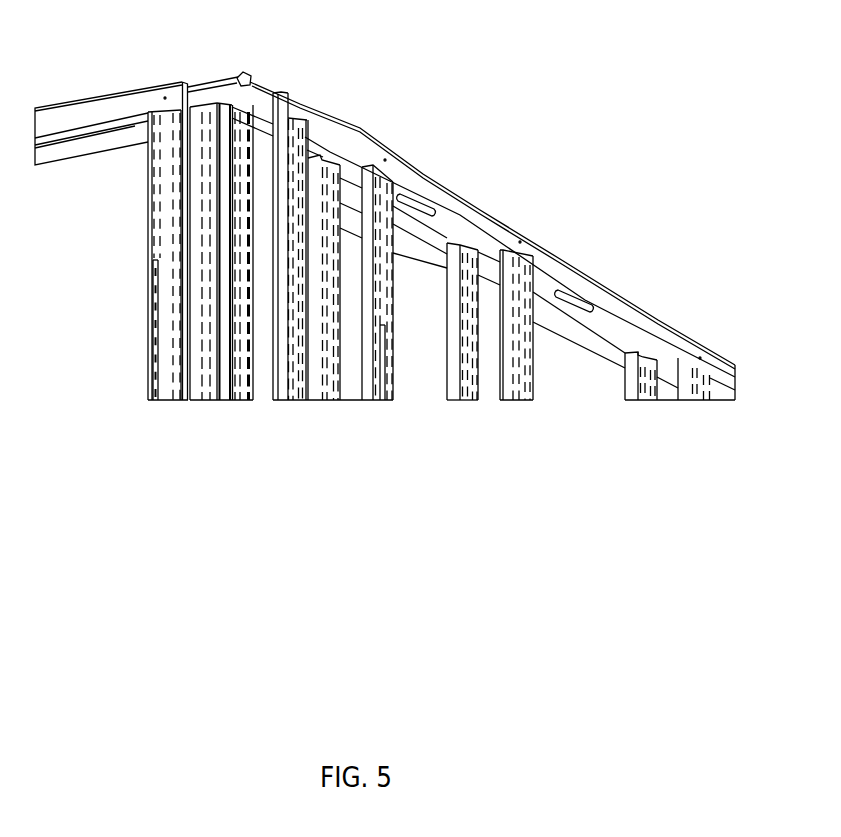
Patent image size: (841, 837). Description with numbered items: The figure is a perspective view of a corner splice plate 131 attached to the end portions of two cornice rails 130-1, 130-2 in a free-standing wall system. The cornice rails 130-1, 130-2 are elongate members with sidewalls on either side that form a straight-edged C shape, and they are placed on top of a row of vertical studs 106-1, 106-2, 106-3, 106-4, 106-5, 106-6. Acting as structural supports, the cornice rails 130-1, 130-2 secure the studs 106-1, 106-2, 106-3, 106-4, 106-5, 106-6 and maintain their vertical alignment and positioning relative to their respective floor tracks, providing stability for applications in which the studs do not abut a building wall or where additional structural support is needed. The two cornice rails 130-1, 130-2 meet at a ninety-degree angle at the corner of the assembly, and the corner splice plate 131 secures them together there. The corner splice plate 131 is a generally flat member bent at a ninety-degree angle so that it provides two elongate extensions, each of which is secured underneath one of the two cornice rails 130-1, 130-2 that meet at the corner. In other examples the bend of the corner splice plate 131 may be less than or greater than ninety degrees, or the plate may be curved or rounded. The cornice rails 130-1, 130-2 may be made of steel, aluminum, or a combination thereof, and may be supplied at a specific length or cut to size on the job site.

The cornice rail 130-1 is at (97, 96).
The cornice rail 130-2 is at (499, 222).
The corner splice plate 131 is at (247, 77).
The stud 106-1 is at (162, 400).
The stud 106-2 is at (248, 400).
The stud 106-3 is at (320, 400).
The stud 106-4 is at (450, 400).
The stud 106-5 is at (525, 400).
The stud 106-6 is at (633, 400).